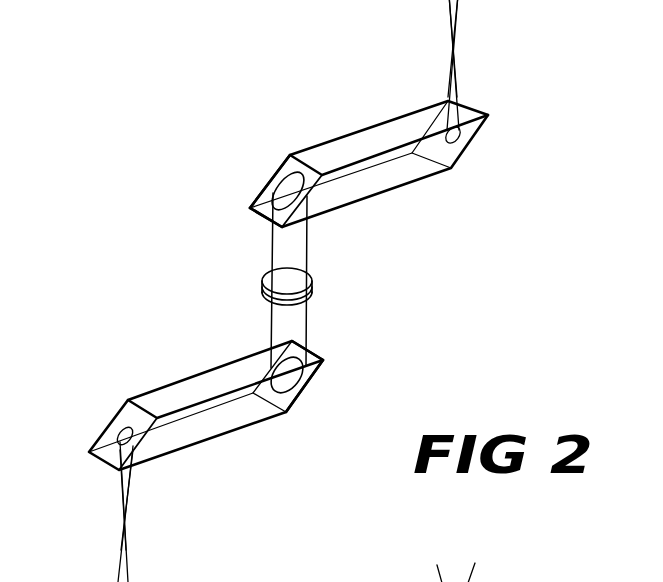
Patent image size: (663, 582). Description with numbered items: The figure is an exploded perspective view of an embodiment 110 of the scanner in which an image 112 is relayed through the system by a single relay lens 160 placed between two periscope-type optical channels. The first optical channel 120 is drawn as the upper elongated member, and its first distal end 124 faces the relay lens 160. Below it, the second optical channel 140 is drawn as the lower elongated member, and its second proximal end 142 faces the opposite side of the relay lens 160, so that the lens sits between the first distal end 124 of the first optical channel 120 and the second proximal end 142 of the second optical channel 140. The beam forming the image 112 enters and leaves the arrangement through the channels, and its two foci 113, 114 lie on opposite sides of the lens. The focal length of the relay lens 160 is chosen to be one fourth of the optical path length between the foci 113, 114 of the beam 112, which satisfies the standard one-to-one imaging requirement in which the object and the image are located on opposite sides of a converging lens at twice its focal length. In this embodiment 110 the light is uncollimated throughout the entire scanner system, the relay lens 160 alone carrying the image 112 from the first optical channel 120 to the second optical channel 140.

The embodiment 110 is at (196, 50).
The image 112 is at (490, 0).
The focus 113 is at (453, 36).
The focus 114 is at (123, 522).
The first optical channel 120 is at (377, 130).
The first distal end 124 is at (278, 168).
The second optical channel 140 is at (218, 372).
The second proximal end 142 is at (315, 372).
The relay lens 160 is at (266, 279).